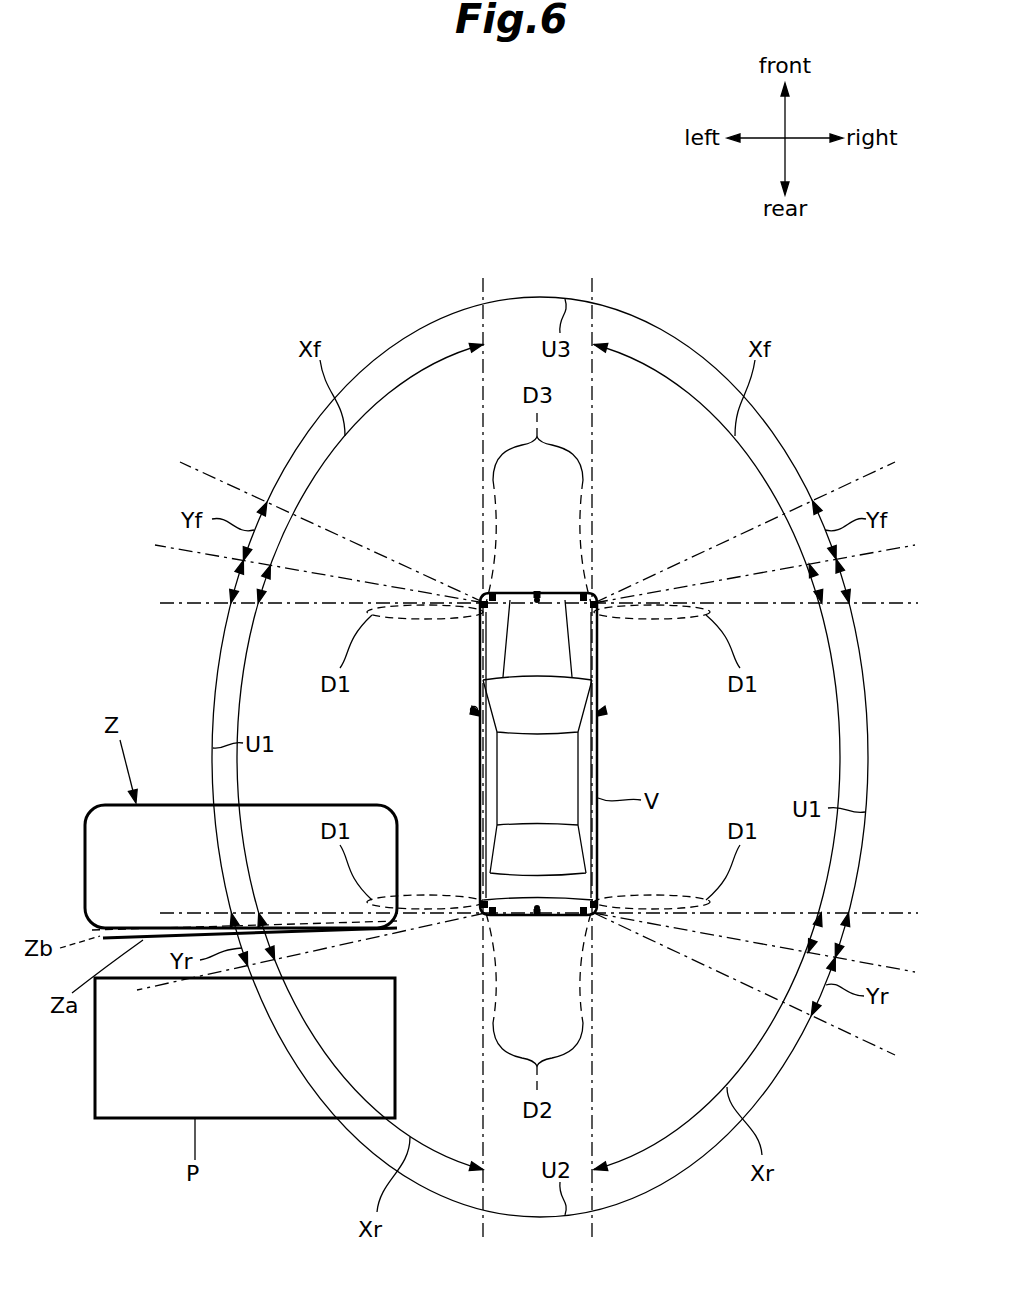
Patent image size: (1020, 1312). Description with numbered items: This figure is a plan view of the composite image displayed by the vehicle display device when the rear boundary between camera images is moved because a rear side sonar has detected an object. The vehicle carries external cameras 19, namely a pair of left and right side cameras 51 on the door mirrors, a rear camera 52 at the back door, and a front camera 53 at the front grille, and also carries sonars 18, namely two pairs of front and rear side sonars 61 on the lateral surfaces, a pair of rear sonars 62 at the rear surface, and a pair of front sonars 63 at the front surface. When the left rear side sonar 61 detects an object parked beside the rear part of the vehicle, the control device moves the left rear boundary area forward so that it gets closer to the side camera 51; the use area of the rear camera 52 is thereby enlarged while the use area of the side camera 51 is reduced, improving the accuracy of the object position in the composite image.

The sonars 18 is at (583, 625).
The external cameras 19 is at (405, 692).
The side camera 51 is at (478, 712).
The rear camera 52 is at (545, 905).
The front camera 53 is at (524, 605).
The side sonar 61 is at (470, 612).
The rear sonar 62 is at (498, 918).
The front sonar 63 is at (498, 592).